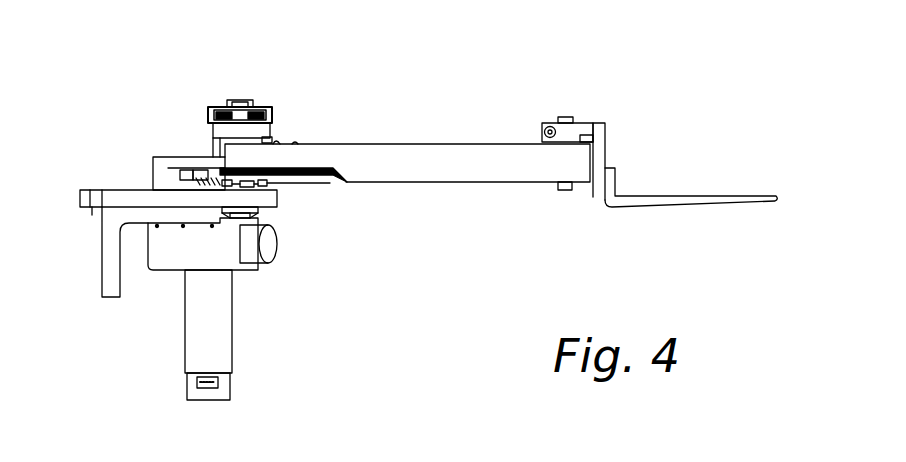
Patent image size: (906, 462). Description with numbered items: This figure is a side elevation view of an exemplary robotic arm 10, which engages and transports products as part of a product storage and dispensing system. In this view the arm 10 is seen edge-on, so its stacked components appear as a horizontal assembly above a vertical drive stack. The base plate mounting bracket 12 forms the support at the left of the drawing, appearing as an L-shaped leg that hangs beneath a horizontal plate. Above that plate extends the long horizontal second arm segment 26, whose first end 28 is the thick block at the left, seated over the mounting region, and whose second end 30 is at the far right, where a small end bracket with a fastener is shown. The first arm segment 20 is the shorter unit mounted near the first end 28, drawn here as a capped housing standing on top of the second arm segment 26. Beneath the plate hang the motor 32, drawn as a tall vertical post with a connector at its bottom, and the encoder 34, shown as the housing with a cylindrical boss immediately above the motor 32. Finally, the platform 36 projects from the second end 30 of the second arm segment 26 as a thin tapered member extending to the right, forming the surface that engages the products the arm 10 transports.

The robotic arm 10 is at (675, 63).
The base plate mounting bracket 12 is at (85, 260).
The first arm segment 20 is at (290, 127).
The second arm segment 26 is at (427, 205).
The first end 28 is at (162, 177).
The second end 30 is at (578, 166).
The motor 32 is at (220, 313).
The encoder 34 is at (232, 255).
The platform 36 is at (715, 178).